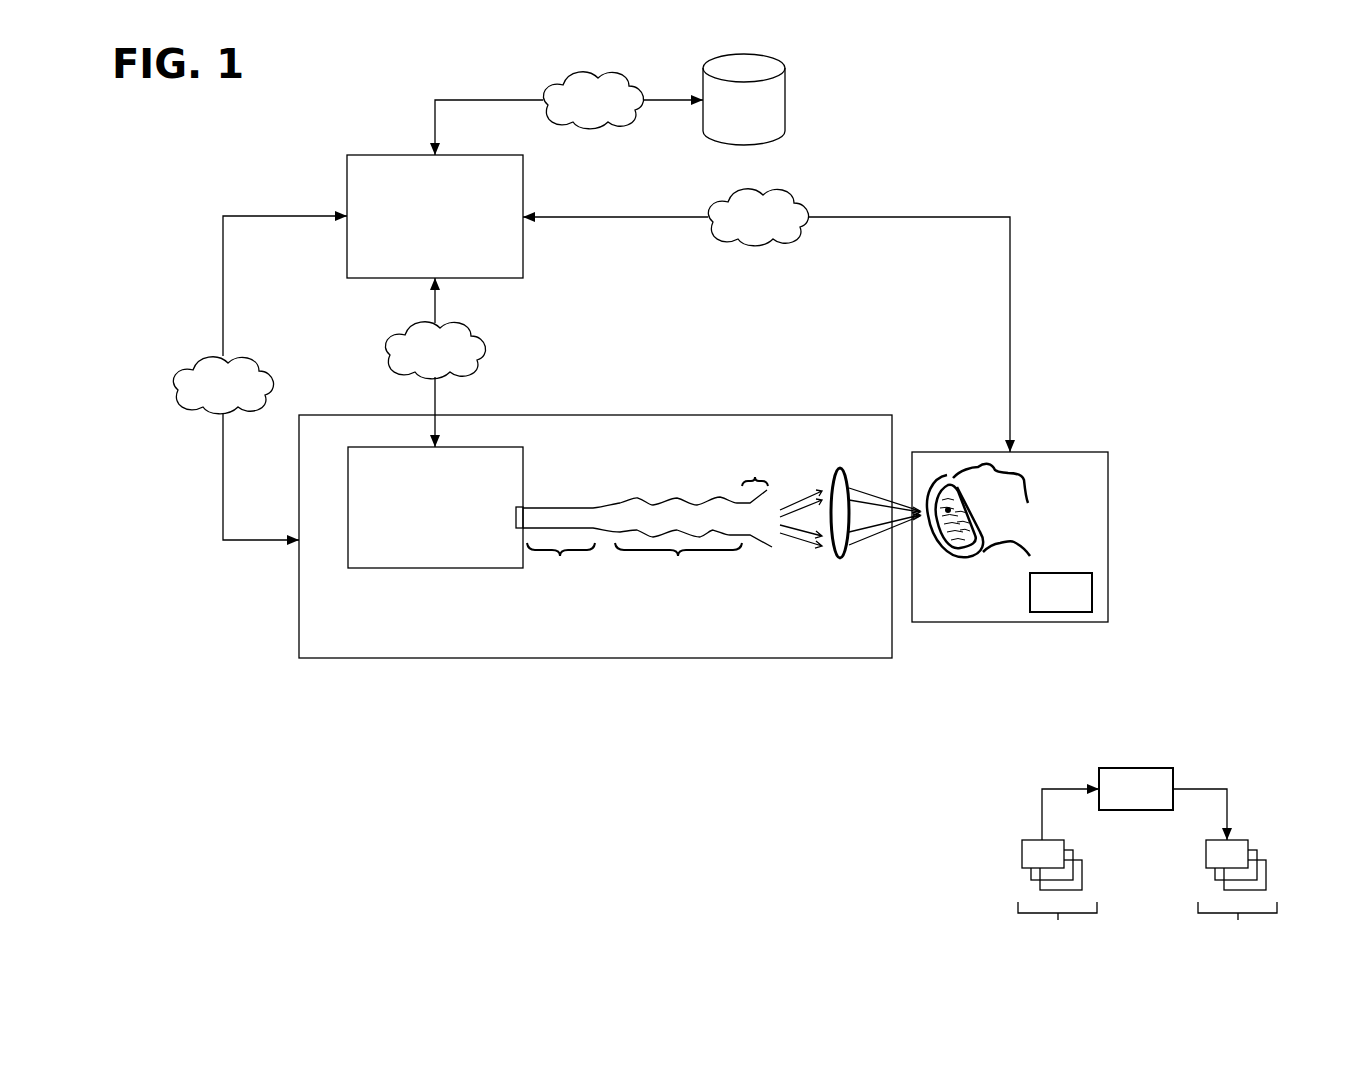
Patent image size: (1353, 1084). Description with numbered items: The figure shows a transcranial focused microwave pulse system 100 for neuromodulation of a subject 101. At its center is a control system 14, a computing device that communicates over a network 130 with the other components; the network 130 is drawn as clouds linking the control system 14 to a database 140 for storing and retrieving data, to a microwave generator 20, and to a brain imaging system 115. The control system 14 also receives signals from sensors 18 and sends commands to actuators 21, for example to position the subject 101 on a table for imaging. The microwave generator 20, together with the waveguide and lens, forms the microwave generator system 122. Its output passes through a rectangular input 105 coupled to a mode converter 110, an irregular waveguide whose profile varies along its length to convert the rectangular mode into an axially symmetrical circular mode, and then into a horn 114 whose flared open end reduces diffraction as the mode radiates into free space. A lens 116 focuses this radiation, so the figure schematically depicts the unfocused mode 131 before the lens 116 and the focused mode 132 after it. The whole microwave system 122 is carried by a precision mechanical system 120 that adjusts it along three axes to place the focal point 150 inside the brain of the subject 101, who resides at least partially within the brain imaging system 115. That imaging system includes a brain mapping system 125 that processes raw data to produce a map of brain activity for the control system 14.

The tFMWP system 100 is at (1107, 80).
The control system 14 is at (760, 482).
The network 130 is at (594, 308).
The database 140 is at (787, 100).
The precision mechanical system 120 is at (413, 658).
The microwave generator 20 is at (435, 507).
The microwave generator system 122 is at (602, 449).
The rectangular input 105 is at (576, 552).
The mode converter 110 is at (713, 553).
The horn 114 is at (743, 481).
The lens 116 is at (837, 472).
The unfocused mode 131 is at (807, 542).
The focused mode 132 is at (882, 542).
The brain imaging system 115 is at (1060, 452).
The subject 101 is at (1030, 503).
The focal point 150 is at (948, 510).
The brain mapping system 125 is at (1061, 592).
The sensors 18 is at (1062, 873).
The actuators 21 is at (1234, 874).